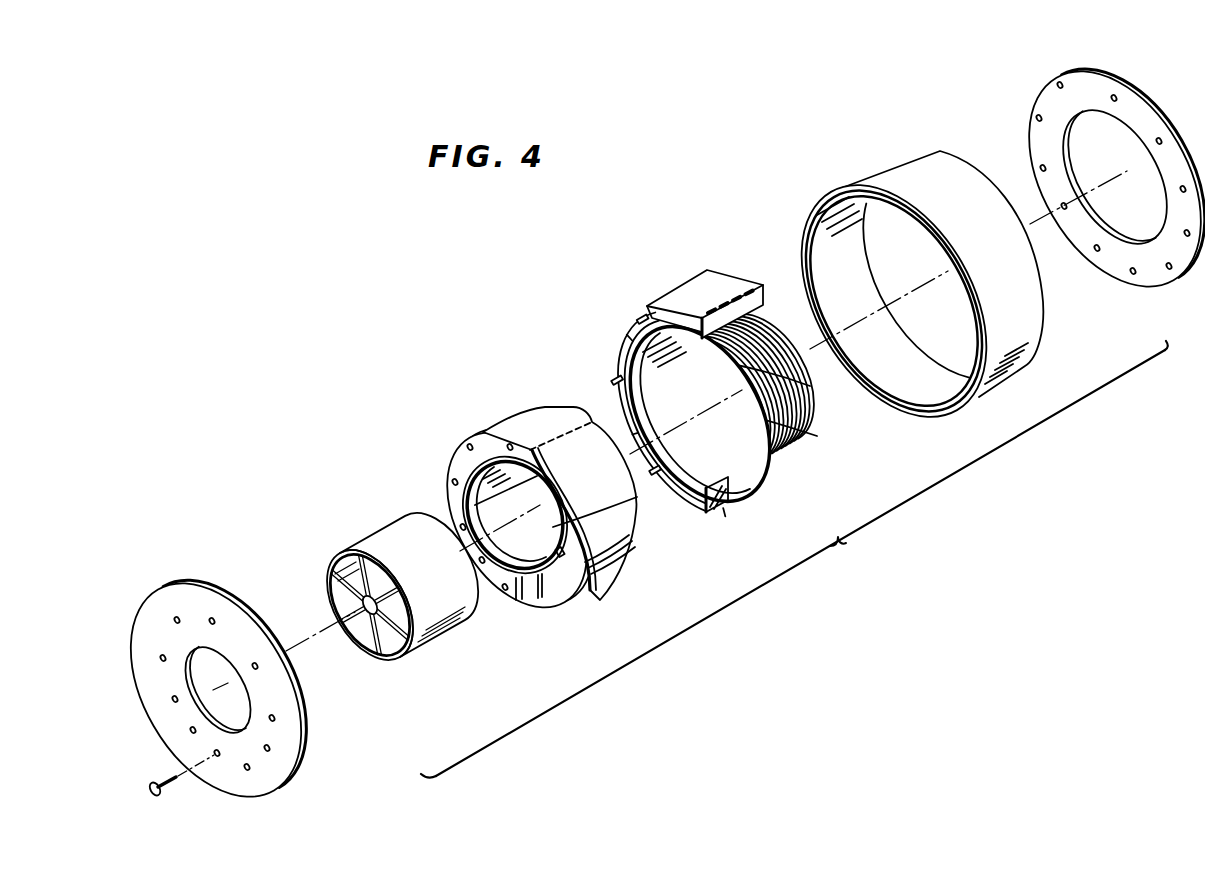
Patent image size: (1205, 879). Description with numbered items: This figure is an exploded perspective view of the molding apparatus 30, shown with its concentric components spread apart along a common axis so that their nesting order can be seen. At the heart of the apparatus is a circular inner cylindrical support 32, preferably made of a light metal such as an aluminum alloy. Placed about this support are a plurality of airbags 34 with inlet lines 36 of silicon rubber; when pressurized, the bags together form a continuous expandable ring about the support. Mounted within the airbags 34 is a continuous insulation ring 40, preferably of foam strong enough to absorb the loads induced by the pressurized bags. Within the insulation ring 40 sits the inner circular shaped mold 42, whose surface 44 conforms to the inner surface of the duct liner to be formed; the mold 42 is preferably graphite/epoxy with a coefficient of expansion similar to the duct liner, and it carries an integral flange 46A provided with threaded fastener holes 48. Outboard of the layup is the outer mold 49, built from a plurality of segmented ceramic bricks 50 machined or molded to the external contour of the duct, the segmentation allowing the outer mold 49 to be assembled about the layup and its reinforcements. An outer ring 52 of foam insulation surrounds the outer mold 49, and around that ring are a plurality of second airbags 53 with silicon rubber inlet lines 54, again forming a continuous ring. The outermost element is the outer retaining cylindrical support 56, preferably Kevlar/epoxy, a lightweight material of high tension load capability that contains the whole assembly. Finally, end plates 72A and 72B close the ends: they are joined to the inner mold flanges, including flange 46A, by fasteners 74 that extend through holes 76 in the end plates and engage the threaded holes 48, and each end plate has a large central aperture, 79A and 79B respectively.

The apparatus 30 is at (605, 285).
The circular inner cylindrical support 32 is at (402, 524).
The airbags 34 is at (566, 568).
The inlet lines 36 is at (563, 550).
The continuous insulation ring 40 is at (628, 533).
The inner circular shaped mold 42 is at (548, 426).
The surface 44 is at (505, 432).
The integral flange 46A is at (486, 444).
The threaded fastener holes 48 is at (453, 483).
The outer mold 49 is at (812, 438).
The ceramic bricks 50 is at (777, 312).
The outer ring of insulation 52 is at (748, 300).
The second airbags 53 is at (705, 282).
The inlet lines 54 is at (638, 318).
The outer retaining cylindrical support 56 is at (878, 172).
The end plate 72A is at (290, 789).
The end plate 72B is at (1060, 73).
The fasteners 74 is at (152, 780).
The holes 76 is at (177, 617).
The large central aperture 79A is at (210, 660).
The large central aperture 79B is at (1073, 128).